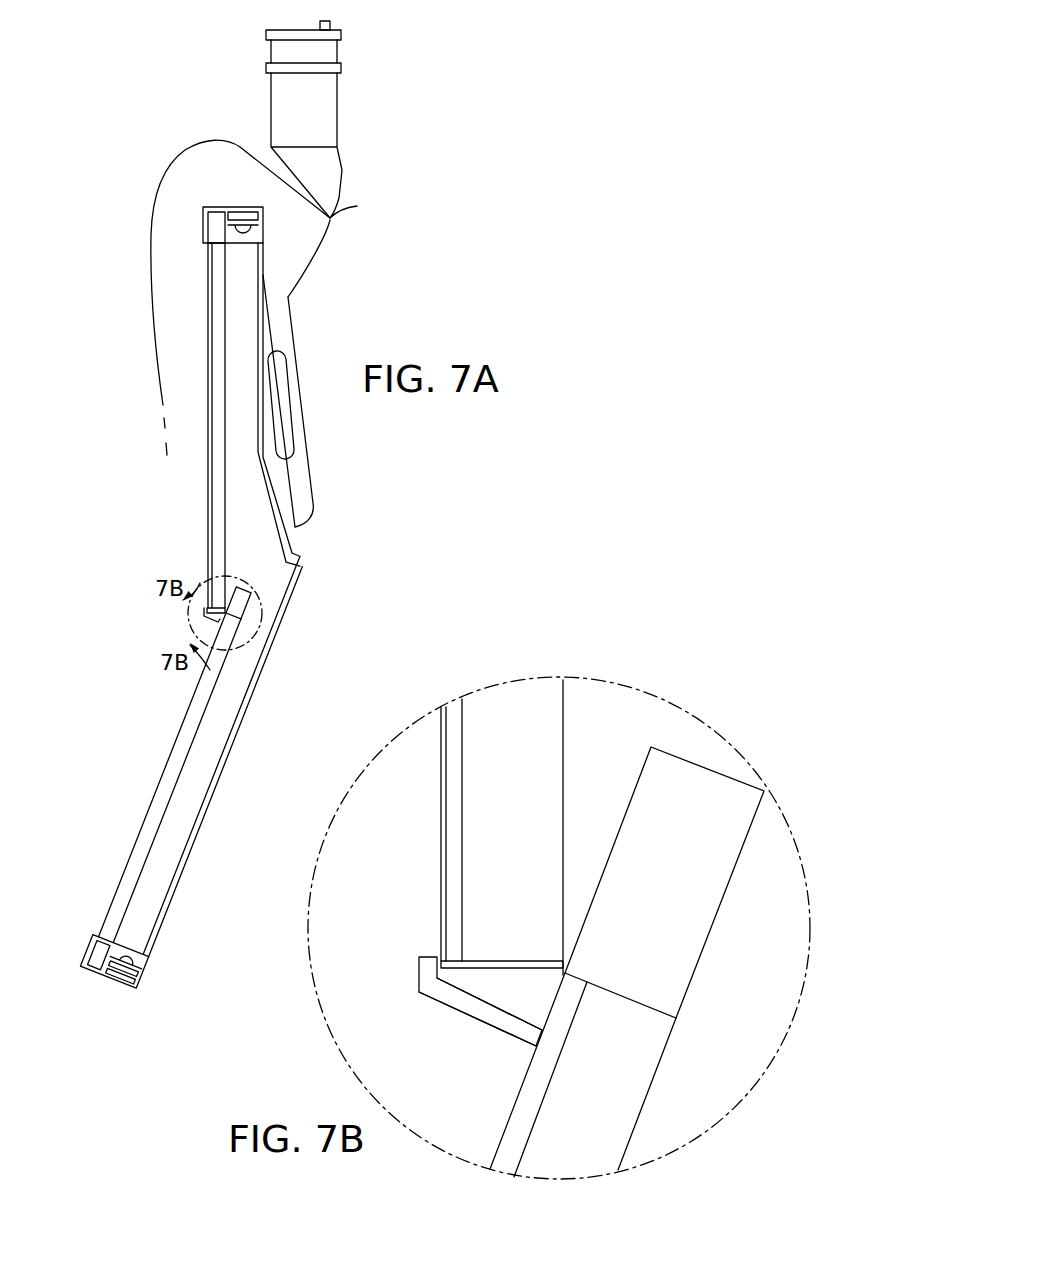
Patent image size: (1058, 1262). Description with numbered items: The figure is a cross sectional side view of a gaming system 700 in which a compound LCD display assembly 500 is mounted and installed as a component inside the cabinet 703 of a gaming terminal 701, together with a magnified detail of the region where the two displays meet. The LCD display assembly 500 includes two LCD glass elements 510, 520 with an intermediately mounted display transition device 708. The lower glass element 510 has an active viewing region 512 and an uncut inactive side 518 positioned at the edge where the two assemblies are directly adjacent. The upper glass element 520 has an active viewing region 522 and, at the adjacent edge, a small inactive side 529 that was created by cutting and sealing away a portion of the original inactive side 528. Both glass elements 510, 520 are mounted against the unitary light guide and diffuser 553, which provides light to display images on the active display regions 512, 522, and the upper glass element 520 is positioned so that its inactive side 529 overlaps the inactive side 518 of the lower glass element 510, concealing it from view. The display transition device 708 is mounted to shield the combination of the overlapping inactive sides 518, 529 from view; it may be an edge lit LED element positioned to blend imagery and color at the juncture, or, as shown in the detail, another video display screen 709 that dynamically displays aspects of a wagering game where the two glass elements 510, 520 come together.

In FIG. 7A, the compound LCD display assembly 500 is at (148, 555).
In FIG. 7A, the glass element 510 is at (165, 765).
In FIG. 7A, the active viewing region 512 is at (182, 727).
In FIG. 7B, the active viewing region 512 is at (625, 1075).
In FIG. 7A, the inactive side 518 is at (240, 607).
In FIG. 7B, the inactive side 518 is at (695, 783).
In FIG. 7A, the glass element 520 is at (205, 280).
In FIG. 7A, the active viewing region 522 is at (218, 353).
In FIG. 7B, the active viewing region 522 is at (520, 702).
In FIG. 7A, the inactive side 528 is at (218, 230).
In FIG. 7B, the inactive side 529 is at (507, 965).
In FIG. 7A, the unitary light guide and diffuser 553 is at (270, 556).
In FIG. 7B, the unitary light guide and diffuser 553 is at (600, 702).
In FIG. 7A, the gaming system 700 is at (390, 93).
In FIG. 7A, the gaming terminal 701 is at (217, 85).
In FIG. 7A, the cabinet 703 is at (138, 163).
In FIG. 7A, the display transition device 708 is at (205, 622).
In FIG. 7B, the display transition device 708 is at (405, 1015).
In FIG. 7B, the video display screen 709 is at (478, 1023).